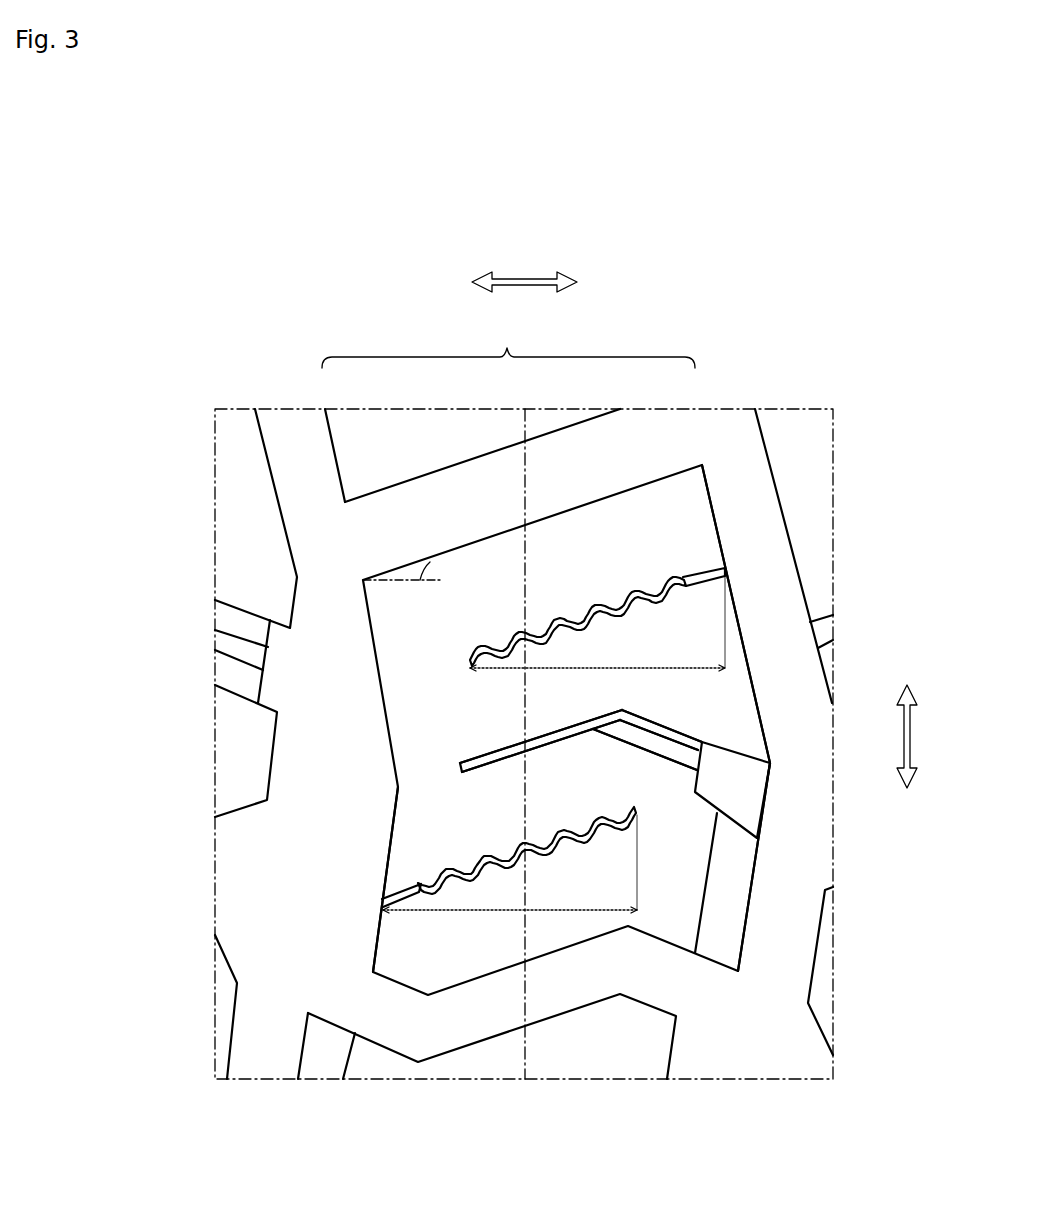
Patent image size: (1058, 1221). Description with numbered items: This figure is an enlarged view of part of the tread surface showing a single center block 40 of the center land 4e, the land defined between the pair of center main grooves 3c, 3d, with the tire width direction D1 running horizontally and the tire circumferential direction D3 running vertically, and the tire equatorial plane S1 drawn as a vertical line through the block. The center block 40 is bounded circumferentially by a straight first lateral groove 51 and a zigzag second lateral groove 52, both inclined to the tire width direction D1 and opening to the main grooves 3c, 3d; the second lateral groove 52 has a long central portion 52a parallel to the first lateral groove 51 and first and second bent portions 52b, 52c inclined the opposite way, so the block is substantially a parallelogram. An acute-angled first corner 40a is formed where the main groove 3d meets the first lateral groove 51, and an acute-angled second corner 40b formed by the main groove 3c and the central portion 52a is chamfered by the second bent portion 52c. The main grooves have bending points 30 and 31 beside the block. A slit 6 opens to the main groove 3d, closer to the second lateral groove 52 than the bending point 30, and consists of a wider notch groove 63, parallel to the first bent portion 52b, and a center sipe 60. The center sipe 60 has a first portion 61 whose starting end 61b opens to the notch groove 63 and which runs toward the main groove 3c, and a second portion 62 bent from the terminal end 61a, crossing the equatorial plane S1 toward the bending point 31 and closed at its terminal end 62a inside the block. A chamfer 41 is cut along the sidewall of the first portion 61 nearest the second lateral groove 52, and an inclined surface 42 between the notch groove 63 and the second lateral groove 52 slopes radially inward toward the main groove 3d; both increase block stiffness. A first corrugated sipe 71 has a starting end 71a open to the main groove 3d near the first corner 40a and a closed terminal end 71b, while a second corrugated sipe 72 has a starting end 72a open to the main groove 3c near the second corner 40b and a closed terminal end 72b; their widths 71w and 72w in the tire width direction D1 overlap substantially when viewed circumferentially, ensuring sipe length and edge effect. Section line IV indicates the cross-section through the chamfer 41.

The tire equatorial plane S1 is at (525, 420).
The center main groove 3c is at (293, 425).
The center main groove 3d is at (722, 425).
The center land 4e is at (508, 348).
The tire width direction D1 is at (524, 277).
The tire circumferential direction D3 is at (915, 736).
The first lateral groove 51 is at (377, 532).
The second lateral groove 52 is at (350, 1002).
The central portion 52a is at (530, 980).
The first bent portion 52b is at (665, 966).
The second bent portion 52c is at (390, 1008).
The bending point of main groove 3c 31 is at (398, 787).
The bending point of main groove 3d 30 is at (770, 763).
The center block 40 is at (750, 636).
The first corner 40a is at (695, 487).
The second corner 40b is at (402, 975).
The chamfer 41 is at (647, 742).
The inclined surface 42 is at (727, 885).
The slit 6 is at (640, 731).
The center sipe 60 is at (595, 705).
The first portion 61 is at (665, 725).
The terminal end of first portion 61a is at (618, 710).
The starting end of first portion 61b is at (700, 742).
The second portion 62 is at (526, 718).
The terminal end of second portion 62a is at (463, 760).
The notch groove 63 is at (753, 793).
The first corrugated sipe 71 is at (578, 605).
The starting end of first corrugated sipe 71a is at (722, 568).
The terminal end of first corrugated sipe 71b is at (470, 657).
The width of first corrugated sipe 71w is at (597, 621).
The second corrugated sipe 72 is at (513, 843).
The starting end of second corrugated sipe 72a is at (395, 897).
The terminal end of second corrugated sipe 72b is at (630, 817).
The width of second corrugated sipe 72w is at (510, 864).
The section line IV is at (666, 741).